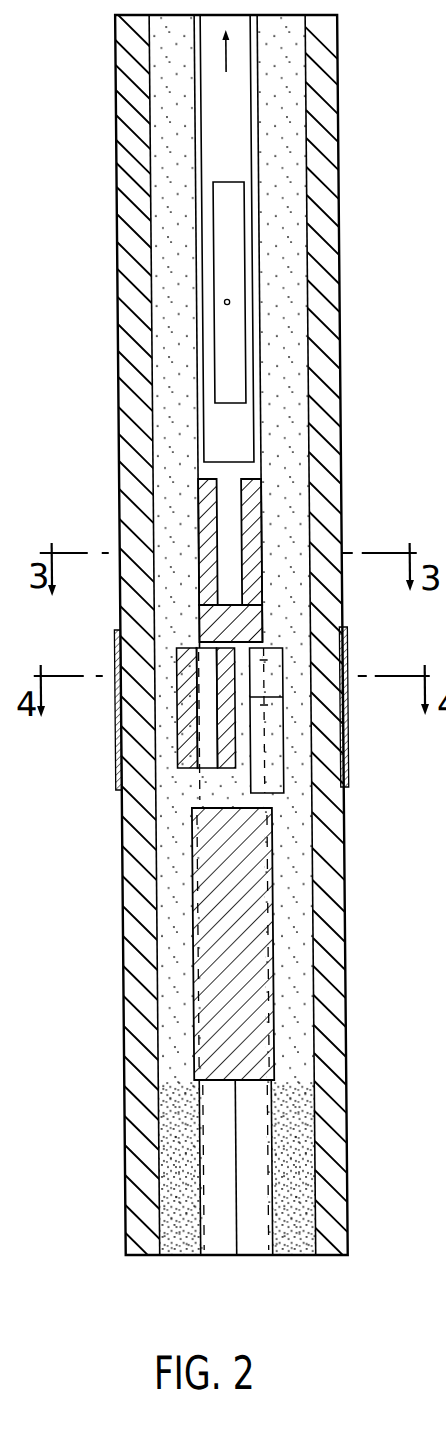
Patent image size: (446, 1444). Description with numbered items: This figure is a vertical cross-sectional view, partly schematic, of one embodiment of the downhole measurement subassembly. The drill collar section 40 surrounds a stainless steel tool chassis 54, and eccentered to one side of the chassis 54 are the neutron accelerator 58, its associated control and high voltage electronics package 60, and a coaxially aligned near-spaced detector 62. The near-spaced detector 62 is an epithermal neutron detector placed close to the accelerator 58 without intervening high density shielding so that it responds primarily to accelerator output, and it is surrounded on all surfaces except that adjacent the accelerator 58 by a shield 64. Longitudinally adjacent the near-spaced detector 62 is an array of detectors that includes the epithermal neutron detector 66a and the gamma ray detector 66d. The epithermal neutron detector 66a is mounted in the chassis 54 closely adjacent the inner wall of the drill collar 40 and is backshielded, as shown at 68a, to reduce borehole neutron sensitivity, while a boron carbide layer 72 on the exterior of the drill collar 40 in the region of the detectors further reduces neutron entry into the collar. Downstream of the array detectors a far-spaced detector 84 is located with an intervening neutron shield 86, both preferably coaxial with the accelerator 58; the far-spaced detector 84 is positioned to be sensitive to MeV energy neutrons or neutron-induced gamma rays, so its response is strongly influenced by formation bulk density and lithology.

The drill collar section 40 is at (118, 302).
The tool chassis 54 is at (298, 402).
The neutron accelerator 58 is at (259, 277).
The control and high voltage electronics package 60 is at (236, 151).
The near-spaced detector 62 is at (203, 520).
The shield 64 is at (257, 528).
The backshielding 68a is at (163, 650).
The epithermal neutron detector 66a is at (201, 702).
The gamma ray detector 66d is at (244, 693).
The boron carbide layer 72 is at (343, 733).
The neutron shield 86 is at (183, 963).
The far-spaced detector 84 is at (182, 1148).